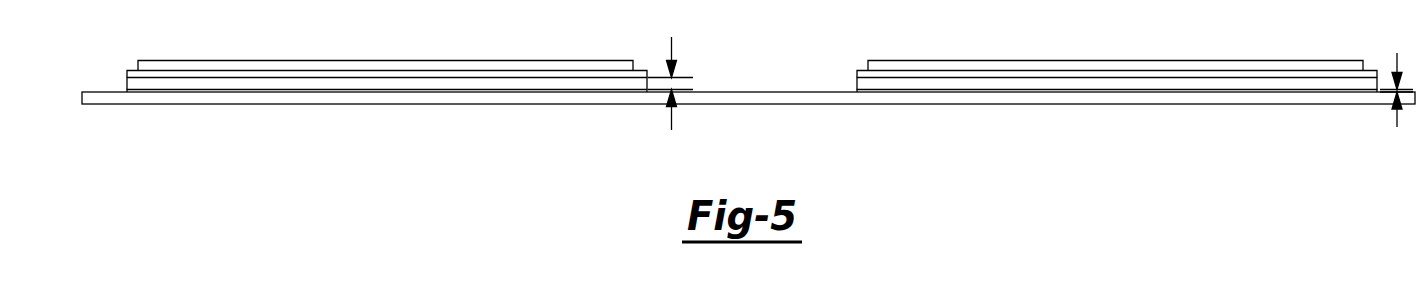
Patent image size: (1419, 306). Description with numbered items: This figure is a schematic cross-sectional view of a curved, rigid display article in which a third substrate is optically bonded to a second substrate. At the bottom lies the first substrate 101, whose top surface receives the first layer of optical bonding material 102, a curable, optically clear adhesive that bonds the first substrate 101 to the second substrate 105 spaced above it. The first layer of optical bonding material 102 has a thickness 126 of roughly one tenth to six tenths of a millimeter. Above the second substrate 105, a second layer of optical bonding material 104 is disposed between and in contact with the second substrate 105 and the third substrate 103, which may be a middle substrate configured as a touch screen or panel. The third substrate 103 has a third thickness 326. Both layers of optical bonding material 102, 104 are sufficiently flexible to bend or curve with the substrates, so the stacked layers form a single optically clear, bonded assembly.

The first substrate 101 is at (727, 93).
The first layer of optical bonding material 102 is at (237, 84).
The third substrate 103 is at (304, 84).
The second layer of optical bonding material 104 is at (370, 73).
The second substrate 105 is at (423, 65).
The thickness of first layer of optical bonding material 126 is at (1396, 77).
The third thickness 326 is at (670, 71).